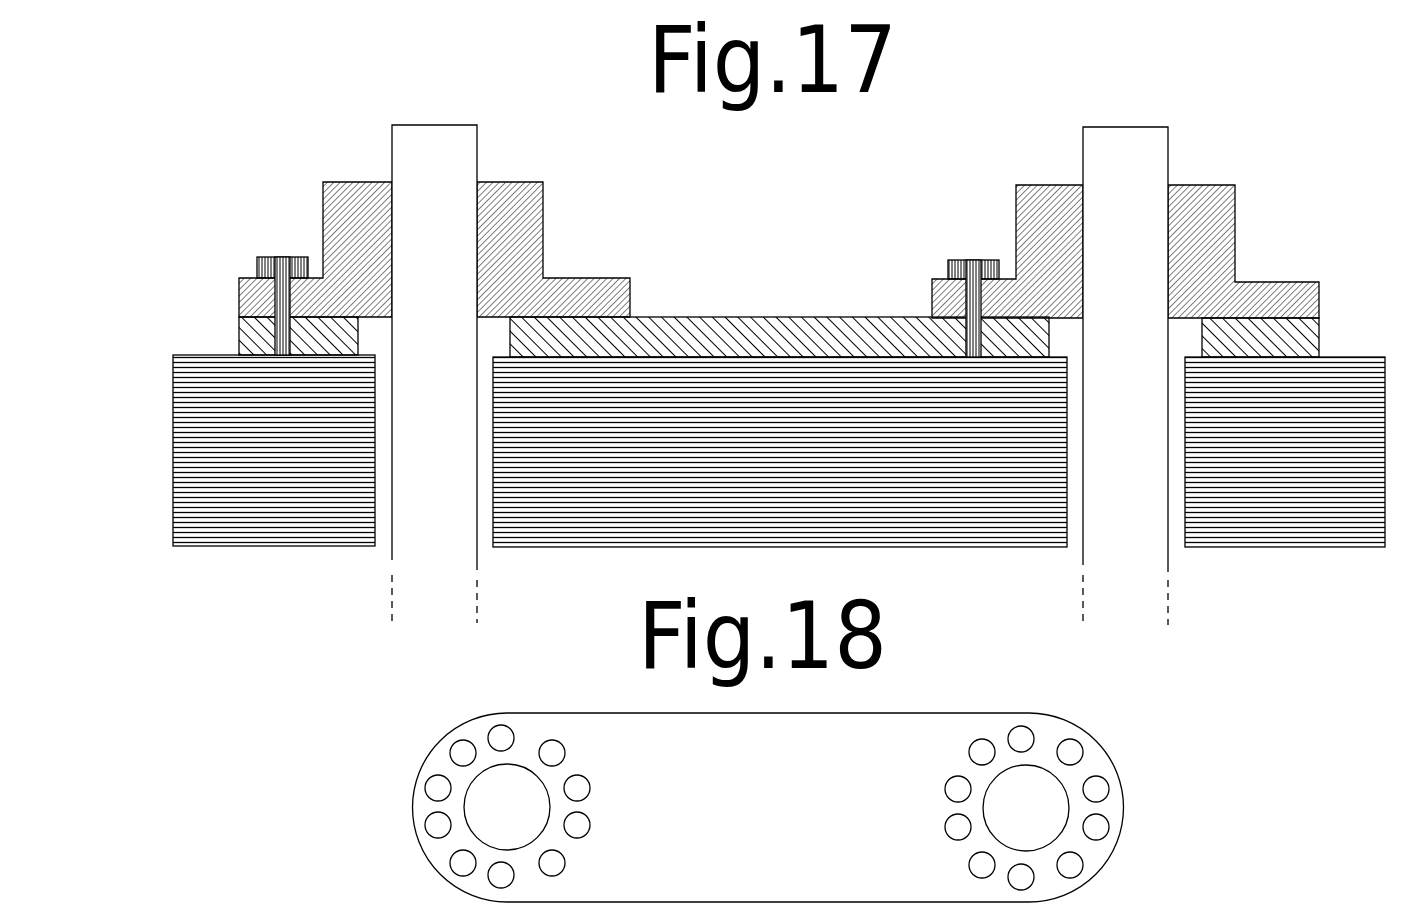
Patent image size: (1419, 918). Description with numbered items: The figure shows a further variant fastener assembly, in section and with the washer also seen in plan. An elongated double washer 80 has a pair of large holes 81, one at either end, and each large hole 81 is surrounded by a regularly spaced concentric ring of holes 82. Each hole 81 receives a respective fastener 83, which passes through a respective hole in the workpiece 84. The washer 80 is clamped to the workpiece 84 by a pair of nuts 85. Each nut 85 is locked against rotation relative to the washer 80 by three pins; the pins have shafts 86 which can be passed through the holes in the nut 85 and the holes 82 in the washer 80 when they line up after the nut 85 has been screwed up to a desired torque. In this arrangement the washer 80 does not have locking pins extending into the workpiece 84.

In FIG. 17, the elongated double washer 80 is at (770, 313).
In FIG. 18, the elongated double washer 80 is at (412, 807).
In FIG. 18, the large hole 81 is at (520, 796).
In FIG. 18, the holes 82 is at (497, 737).
In FIG. 17, the fastener 83 is at (412, 547).
In FIG. 17, the workpiece 84 is at (555, 537).
In FIG. 17, the nut 85 is at (322, 205).
In FIG. 17, the shaft 86 is at (278, 337).